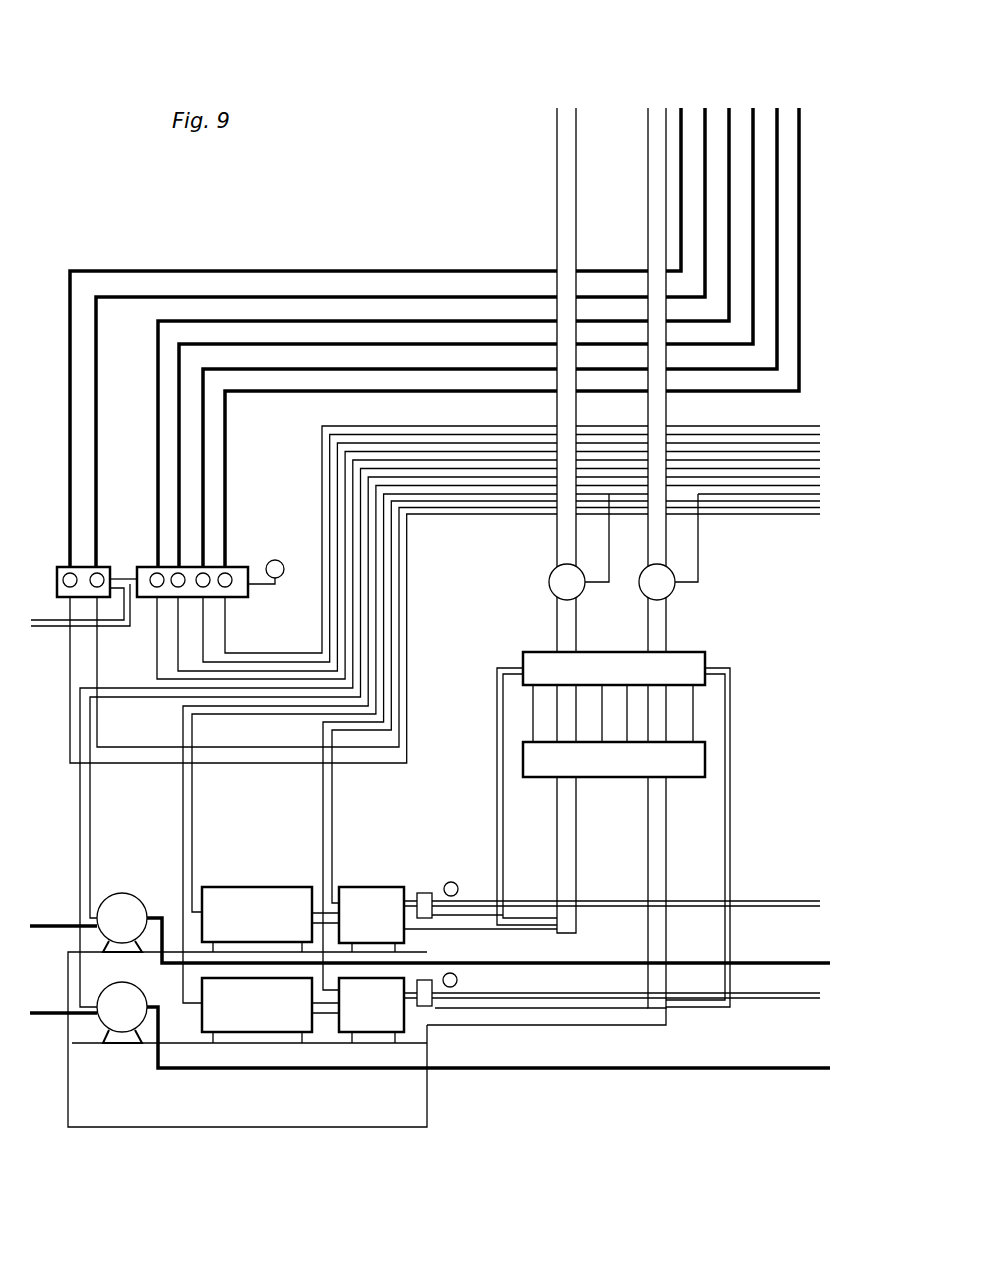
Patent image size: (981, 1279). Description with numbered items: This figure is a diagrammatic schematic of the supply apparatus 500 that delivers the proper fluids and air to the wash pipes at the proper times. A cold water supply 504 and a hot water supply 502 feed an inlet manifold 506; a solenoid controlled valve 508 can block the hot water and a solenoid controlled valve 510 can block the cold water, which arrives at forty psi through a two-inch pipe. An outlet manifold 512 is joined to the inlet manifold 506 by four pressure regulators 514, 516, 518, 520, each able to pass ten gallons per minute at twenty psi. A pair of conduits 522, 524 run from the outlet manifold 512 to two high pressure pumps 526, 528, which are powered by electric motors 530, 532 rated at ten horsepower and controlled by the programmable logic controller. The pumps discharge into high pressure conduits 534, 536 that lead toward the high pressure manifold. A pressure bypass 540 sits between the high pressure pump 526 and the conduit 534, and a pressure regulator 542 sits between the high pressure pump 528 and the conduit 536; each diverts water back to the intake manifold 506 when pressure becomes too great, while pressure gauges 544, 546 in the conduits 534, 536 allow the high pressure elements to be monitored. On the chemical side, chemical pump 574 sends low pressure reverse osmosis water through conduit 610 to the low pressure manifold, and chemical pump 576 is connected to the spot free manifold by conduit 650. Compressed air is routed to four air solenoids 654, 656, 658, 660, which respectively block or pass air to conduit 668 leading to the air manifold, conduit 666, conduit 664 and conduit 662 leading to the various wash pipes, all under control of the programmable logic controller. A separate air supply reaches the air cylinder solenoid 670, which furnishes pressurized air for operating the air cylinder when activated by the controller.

The supply apparatus 500 is at (141, 218).
The hot water supply 502 is at (650, 195).
The cold water supply 504 is at (559, 195).
The inlet manifold 506 is at (705, 656).
The solenoid controlled valve 508 is at (677, 598).
The solenoid controlled valve 510 is at (584, 600).
The outlet manifold 512 is at (705, 760).
The pressure regulator 514 is at (533, 703).
The pressure regulator 516 is at (580, 717).
The pressure regulator 518 is at (640, 708).
The pressure regulator 520 is at (682, 728).
The conduit 522 is at (577, 863).
The conduit 524 is at (668, 863).
The high pressure pump 526 is at (448, 919).
The high pressure pump 528 is at (378, 1010).
The electric motor 530 is at (270, 919).
The electric motor 532 is at (270, 1010).
The high pressure conduit 534 is at (775, 900).
The high pressure conduit 536 is at (783, 1003).
The pressure bypass 540 is at (423, 892).
The pressure regulator 542 is at (430, 984).
The pressure gauge 544 is at (476, 871).
The pressure gauge 546 is at (458, 980).
The chemical pump 574 is at (430, 928).
The chemical pump 576 is at (430, 1025).
The conduit 610 is at (766, 964).
The conduit 650 is at (701, 1075).
The solenoid 654 is at (150, 562).
The solenoid 656 is at (163, 598).
The solenoid 658 is at (242, 557).
The solenoid 660 is at (241, 599).
The conduit 662 is at (226, 480).
The conduit 664 is at (205, 433).
The conduit 666 is at (179, 432).
The conduit 668 is at (158, 474).
The air cylinder solenoid 670 is at (58, 577).